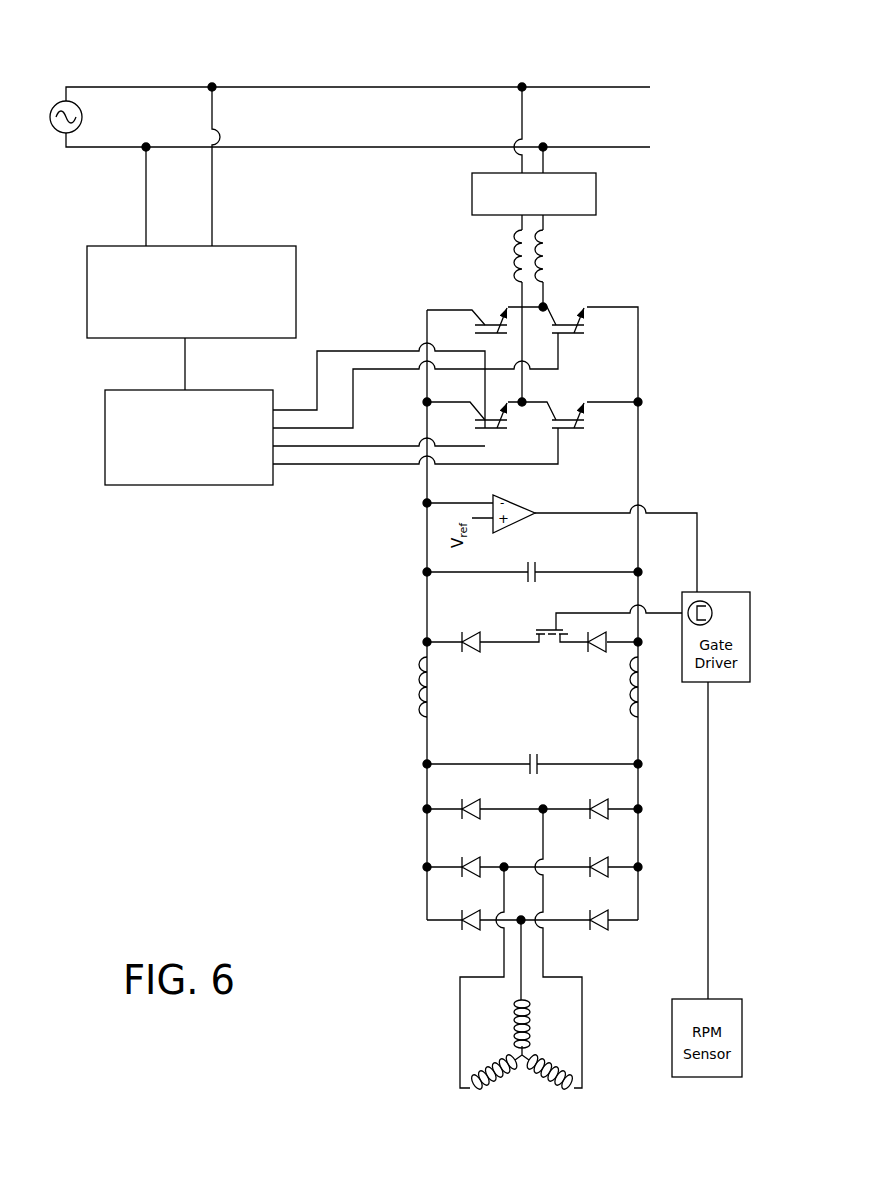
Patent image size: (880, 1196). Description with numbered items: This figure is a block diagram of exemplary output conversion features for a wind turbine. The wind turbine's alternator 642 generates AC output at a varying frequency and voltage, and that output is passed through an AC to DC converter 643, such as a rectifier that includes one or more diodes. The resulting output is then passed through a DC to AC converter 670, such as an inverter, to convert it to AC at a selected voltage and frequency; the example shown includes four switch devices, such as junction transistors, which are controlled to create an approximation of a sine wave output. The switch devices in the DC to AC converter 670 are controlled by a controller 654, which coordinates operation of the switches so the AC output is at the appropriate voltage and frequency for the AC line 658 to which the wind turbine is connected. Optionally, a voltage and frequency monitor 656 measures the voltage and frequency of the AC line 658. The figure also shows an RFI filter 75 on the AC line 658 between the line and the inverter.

The AC line 658 is at (576, 59).
The RFI filter 75 is at (596, 190).
The voltage and frequency monitor 656 is at (296, 265).
The controller 654 is at (177, 485).
The DC to AC converter 670 is at (656, 357).
The AC to DC converter 643 is at (390, 862).
The alternator 642 is at (422, 1033).